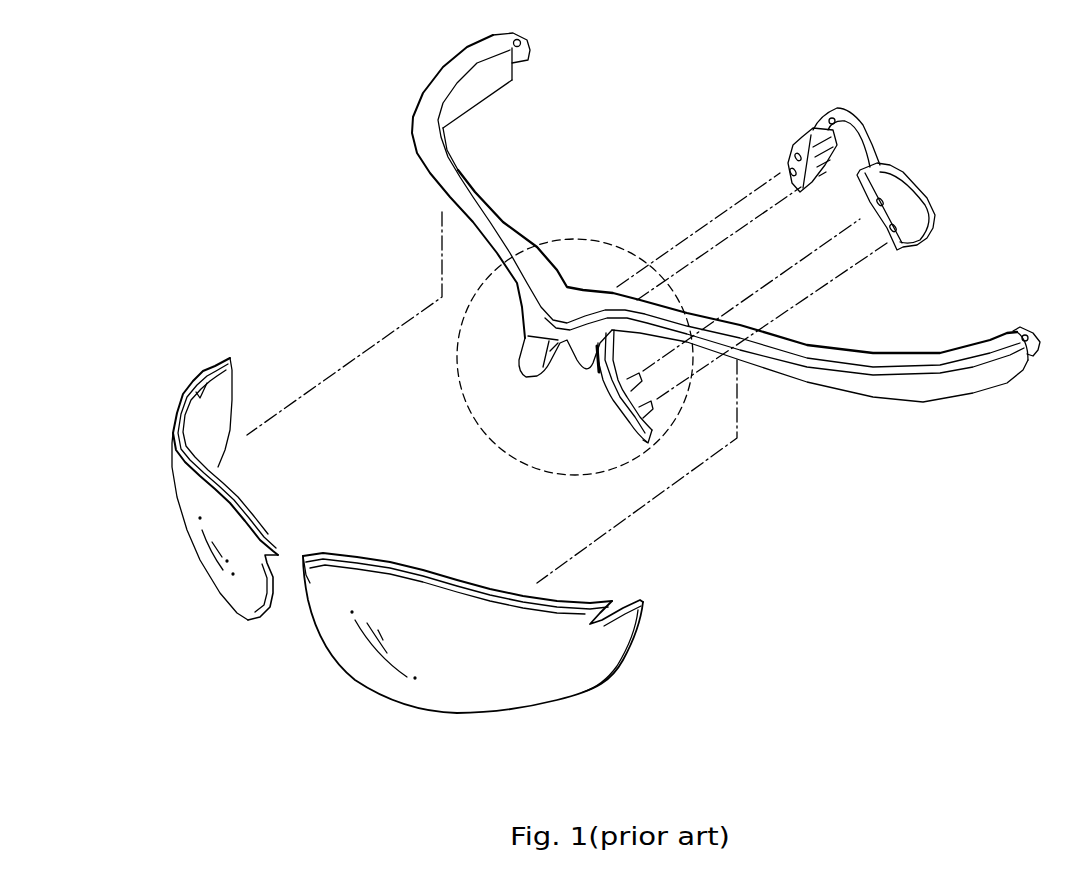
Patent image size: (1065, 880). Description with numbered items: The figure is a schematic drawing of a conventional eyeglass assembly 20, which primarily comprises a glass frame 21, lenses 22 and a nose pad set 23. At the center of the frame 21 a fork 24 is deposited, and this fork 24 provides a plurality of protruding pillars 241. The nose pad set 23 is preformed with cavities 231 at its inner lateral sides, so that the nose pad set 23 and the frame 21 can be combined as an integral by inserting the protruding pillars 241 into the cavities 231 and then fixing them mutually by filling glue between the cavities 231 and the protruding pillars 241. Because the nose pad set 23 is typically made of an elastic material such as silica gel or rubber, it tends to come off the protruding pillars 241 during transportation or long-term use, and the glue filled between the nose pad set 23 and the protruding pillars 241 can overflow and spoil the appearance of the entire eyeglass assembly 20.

The eyeglass assembly 20 is at (282, 128).
The glass frame 21 is at (983, 377).
The lenses 22 is at (523, 693).
The nose pad set 23 is at (886, 156).
The cavities 231 is at (790, 158).
The fork 24 is at (579, 237).
The protruding pillars 241 is at (654, 408).